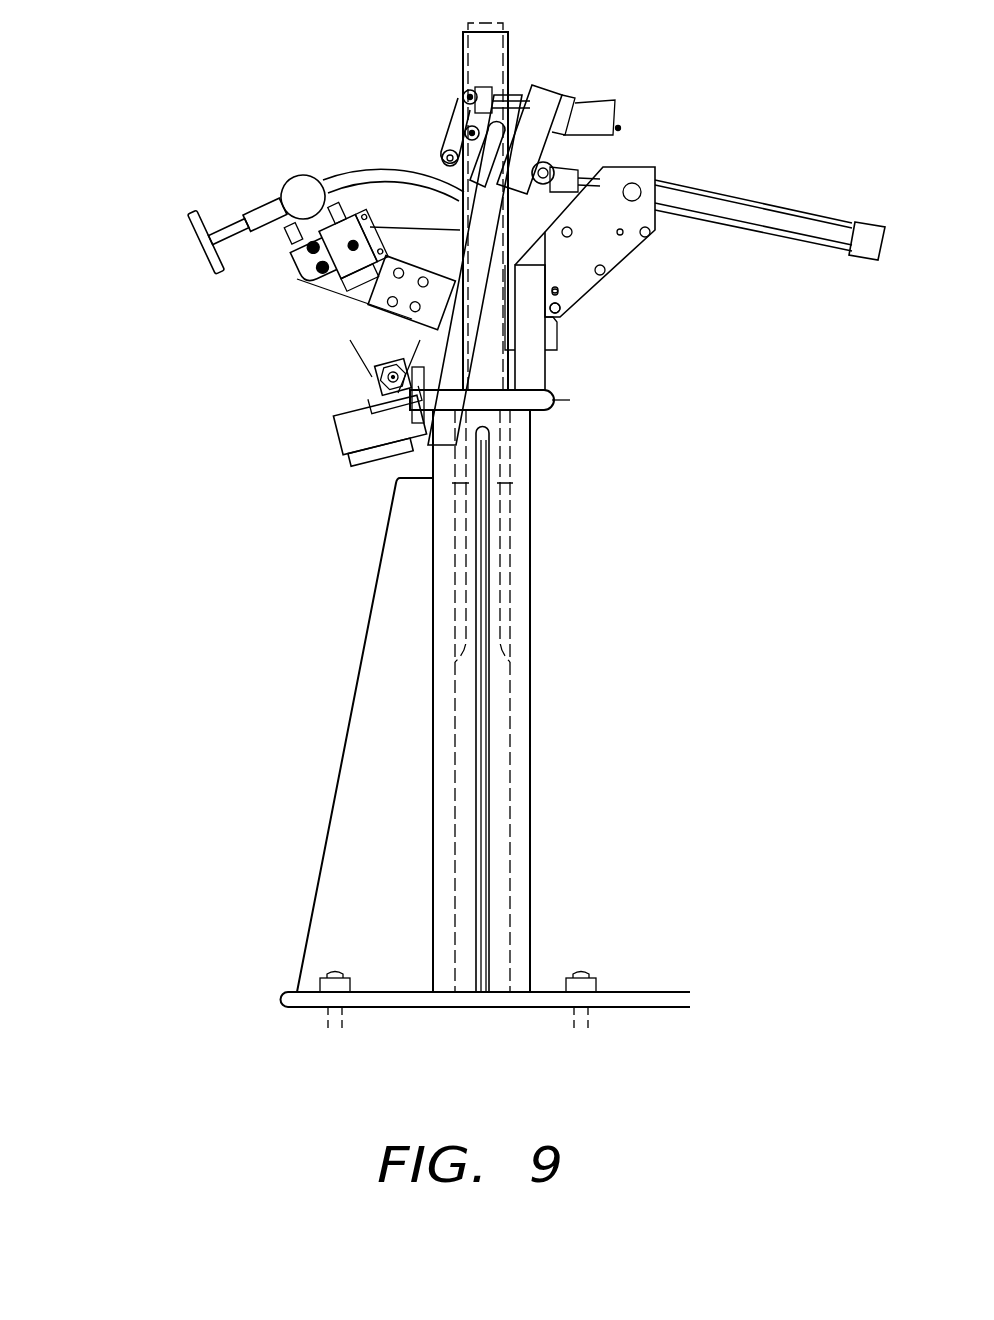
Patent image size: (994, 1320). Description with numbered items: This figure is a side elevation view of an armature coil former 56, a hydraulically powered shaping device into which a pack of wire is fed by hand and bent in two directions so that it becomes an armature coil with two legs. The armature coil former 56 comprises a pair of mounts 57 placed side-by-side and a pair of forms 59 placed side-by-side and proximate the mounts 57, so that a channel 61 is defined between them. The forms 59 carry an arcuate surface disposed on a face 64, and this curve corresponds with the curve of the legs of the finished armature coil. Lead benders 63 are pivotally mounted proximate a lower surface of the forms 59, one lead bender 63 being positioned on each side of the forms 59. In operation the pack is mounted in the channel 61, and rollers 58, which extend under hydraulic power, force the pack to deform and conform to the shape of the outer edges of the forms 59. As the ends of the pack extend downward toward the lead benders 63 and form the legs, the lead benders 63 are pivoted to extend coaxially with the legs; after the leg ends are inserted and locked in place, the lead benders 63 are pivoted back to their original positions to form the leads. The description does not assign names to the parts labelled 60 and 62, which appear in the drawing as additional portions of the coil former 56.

The armature coil former 56 is at (147, 362).
The mounts 57 is at (345, 298).
The rollers 58 is at (467, 93).
The forms 59 is at (423, 177).
The lower clamp block 60 is at (360, 387).
The channel 61 is at (333, 292).
The mounting bracket 62 is at (577, 170).
The lead benders 63 is at (293, 177).
The face 64 is at (358, 167).